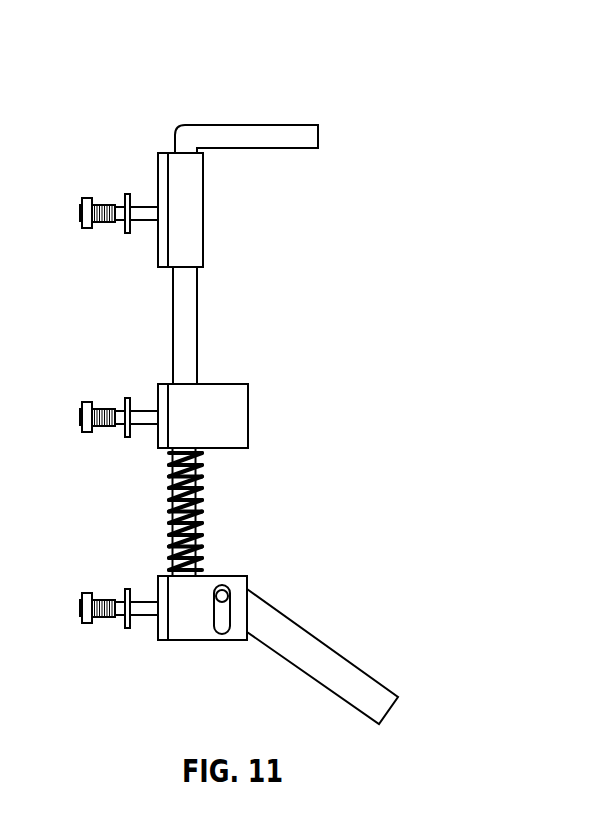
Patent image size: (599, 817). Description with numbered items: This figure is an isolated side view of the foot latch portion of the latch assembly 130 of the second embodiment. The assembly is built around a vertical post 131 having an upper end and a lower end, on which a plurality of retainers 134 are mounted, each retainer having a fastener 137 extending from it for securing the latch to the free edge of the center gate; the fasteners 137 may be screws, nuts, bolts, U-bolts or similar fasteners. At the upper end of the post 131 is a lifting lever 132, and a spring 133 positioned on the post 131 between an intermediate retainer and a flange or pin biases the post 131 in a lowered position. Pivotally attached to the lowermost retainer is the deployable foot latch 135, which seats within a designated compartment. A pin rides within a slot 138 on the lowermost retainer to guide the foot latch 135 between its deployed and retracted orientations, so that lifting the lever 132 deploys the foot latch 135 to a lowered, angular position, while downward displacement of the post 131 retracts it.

The latch assembly 130 is at (147, 80).
The post 131 is at (196, 308).
The lifting lever 132 is at (318, 137).
The spring 133 is at (202, 498).
The retainers 134 is at (203, 198).
The foot latch 135 is at (367, 672).
The fastener 137 is at (88, 229).
The slot 138 is at (222, 636).